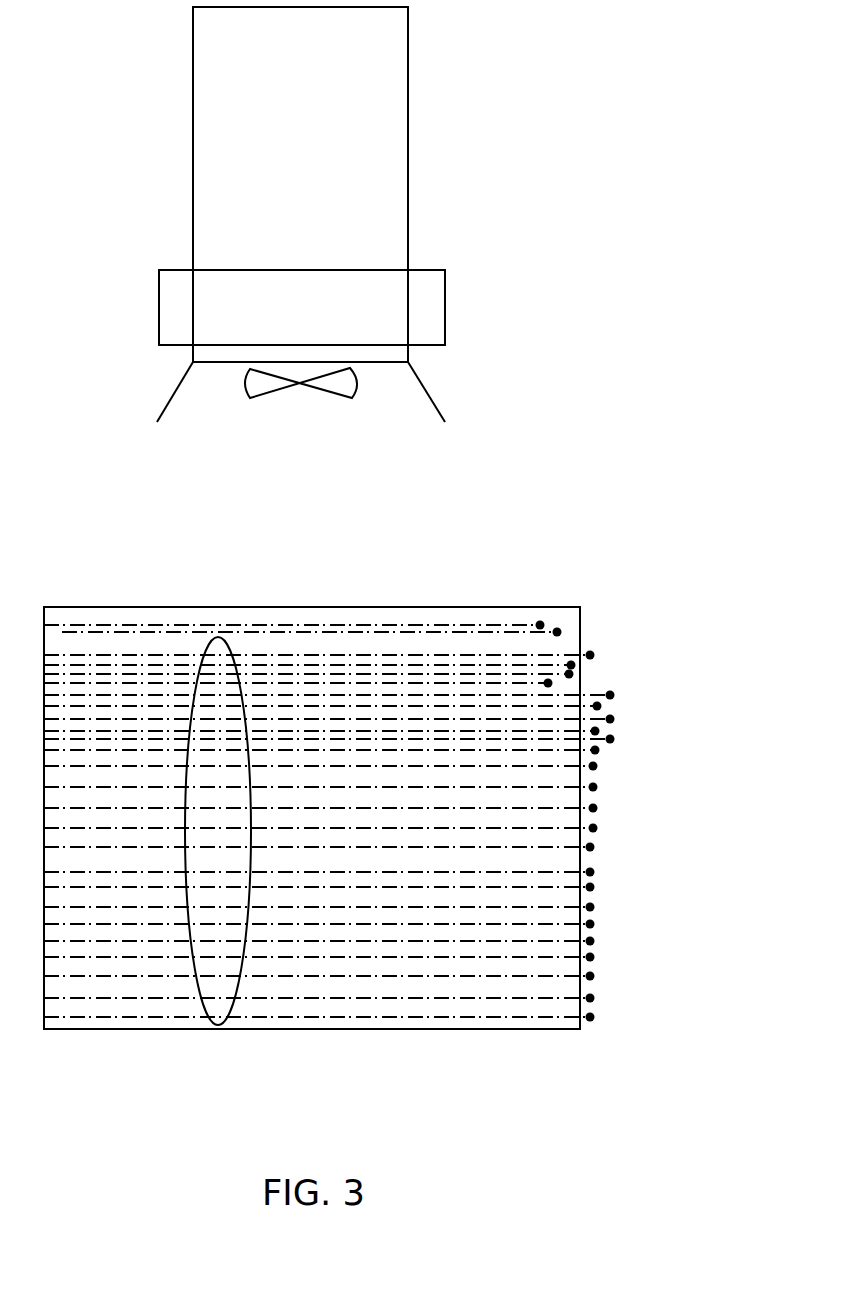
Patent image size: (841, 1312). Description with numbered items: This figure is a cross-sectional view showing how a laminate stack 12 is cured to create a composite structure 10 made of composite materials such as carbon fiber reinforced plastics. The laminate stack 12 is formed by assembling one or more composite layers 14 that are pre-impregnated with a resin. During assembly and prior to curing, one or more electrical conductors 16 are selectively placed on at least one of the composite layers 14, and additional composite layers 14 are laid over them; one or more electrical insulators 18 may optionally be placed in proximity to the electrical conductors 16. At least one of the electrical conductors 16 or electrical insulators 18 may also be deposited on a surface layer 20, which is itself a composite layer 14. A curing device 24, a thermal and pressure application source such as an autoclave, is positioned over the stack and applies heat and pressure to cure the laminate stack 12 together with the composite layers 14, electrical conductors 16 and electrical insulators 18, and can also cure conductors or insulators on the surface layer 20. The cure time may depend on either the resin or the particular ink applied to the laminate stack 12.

The composite structure 10 is at (85, 570).
The laminate stack 12 is at (218, 606).
The composite layers 14 is at (219, 1029).
The electrical conductors 16 is at (333, 627).
The electrical insulators 18 is at (377, 620).
The surface layer 20 is at (423, 607).
The curing device 24 is at (408, 239).